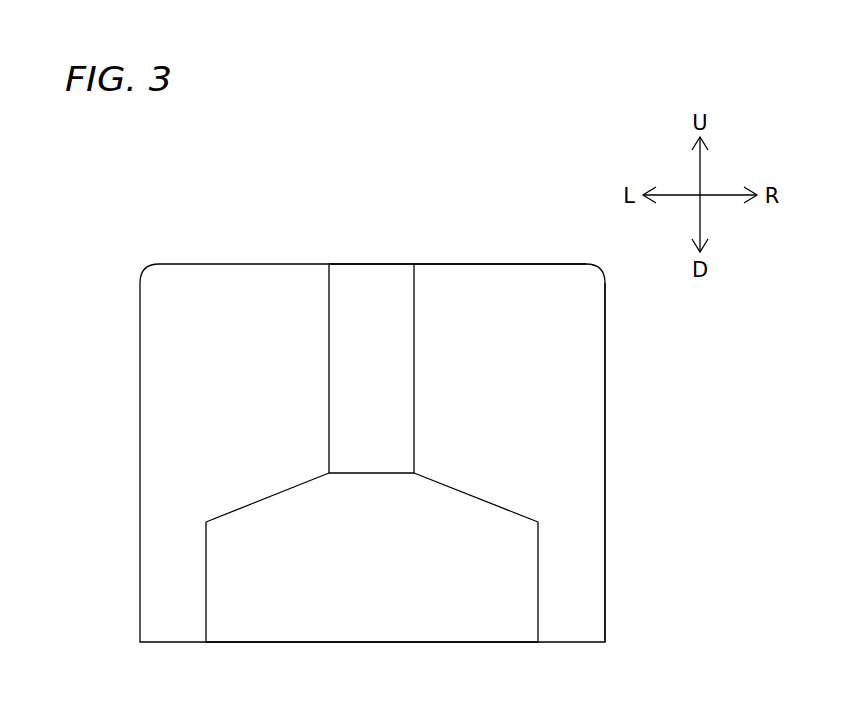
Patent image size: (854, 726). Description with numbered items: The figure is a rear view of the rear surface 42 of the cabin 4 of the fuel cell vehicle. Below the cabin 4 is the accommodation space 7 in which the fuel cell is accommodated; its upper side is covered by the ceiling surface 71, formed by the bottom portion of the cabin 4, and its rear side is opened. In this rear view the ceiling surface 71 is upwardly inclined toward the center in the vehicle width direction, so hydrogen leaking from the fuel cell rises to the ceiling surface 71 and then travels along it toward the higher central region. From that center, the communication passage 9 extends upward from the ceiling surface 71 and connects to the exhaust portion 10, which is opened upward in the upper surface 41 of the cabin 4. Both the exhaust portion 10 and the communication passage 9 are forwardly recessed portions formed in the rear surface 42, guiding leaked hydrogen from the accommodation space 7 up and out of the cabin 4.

The cabin 4 is at (187, 240).
The accommodation space 7 is at (376, 582).
The communication passage 9 is at (383, 363).
The exhaust portion 10 is at (373, 264).
The upper surface 41 is at (498, 264).
The rear surface 42 is at (546, 436).
The ceiling surface 71 is at (280, 495).